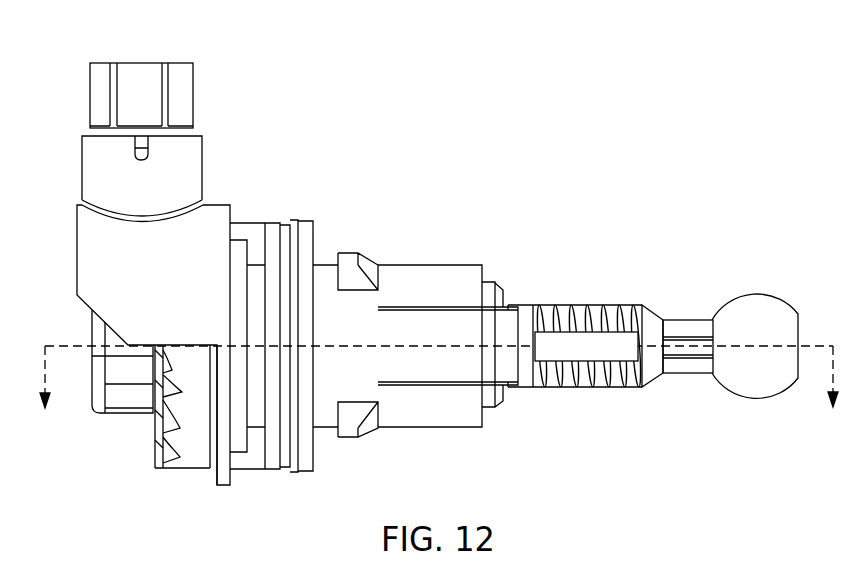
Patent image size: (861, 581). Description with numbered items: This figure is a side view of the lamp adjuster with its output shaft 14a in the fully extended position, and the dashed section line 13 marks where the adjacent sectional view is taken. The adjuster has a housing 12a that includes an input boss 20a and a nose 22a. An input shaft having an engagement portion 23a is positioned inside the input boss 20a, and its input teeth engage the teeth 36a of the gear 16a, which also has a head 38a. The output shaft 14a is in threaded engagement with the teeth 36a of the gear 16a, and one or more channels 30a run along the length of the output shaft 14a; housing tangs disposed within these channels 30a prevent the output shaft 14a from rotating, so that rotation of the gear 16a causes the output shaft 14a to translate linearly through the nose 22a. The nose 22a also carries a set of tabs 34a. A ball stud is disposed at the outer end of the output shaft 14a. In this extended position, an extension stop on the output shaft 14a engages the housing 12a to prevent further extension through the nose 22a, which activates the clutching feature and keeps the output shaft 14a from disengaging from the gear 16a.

The housing 12a is at (87, 250).
The section line 13- 13 is at (438, 390).
The output shaft 14a is at (652, 303).
The gear 16a is at (190, 448).
The input boss 20a is at (92, 180).
The nose 22a is at (433, 272).
The engagement portion 23a is at (143, 73).
The channels 30a is at (602, 340).
The tabs 34a is at (349, 262).
The teeth 36a is at (166, 413).
The head 38a is at (122, 376).